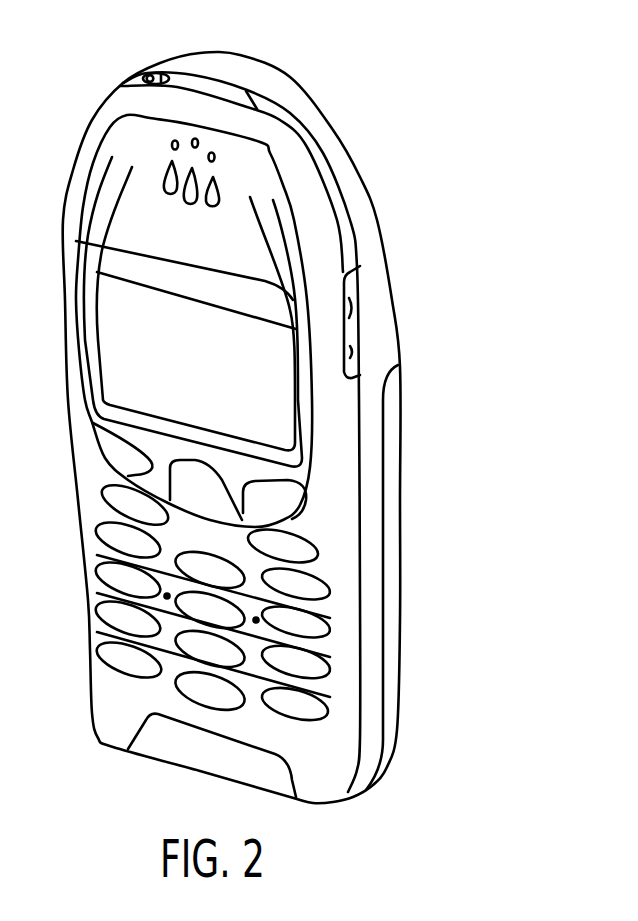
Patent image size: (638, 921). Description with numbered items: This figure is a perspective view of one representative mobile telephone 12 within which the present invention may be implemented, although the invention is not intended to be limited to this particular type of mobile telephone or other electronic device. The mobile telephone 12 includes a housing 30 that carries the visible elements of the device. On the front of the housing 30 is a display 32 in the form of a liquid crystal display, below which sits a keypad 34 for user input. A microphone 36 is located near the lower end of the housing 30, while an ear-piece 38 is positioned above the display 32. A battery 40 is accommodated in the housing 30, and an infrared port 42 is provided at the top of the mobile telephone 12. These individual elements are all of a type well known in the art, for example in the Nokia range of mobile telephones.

The mobile telephone 12 is at (345, 55).
The housing 30 is at (367, 206).
The display 32 is at (275, 400).
The keypad 34 is at (293, 708).
The microphone 36 is at (157, 743).
The ear-piece 38 is at (170, 163).
The battery 40 is at (390, 693).
The infrared port 42 is at (212, 88).